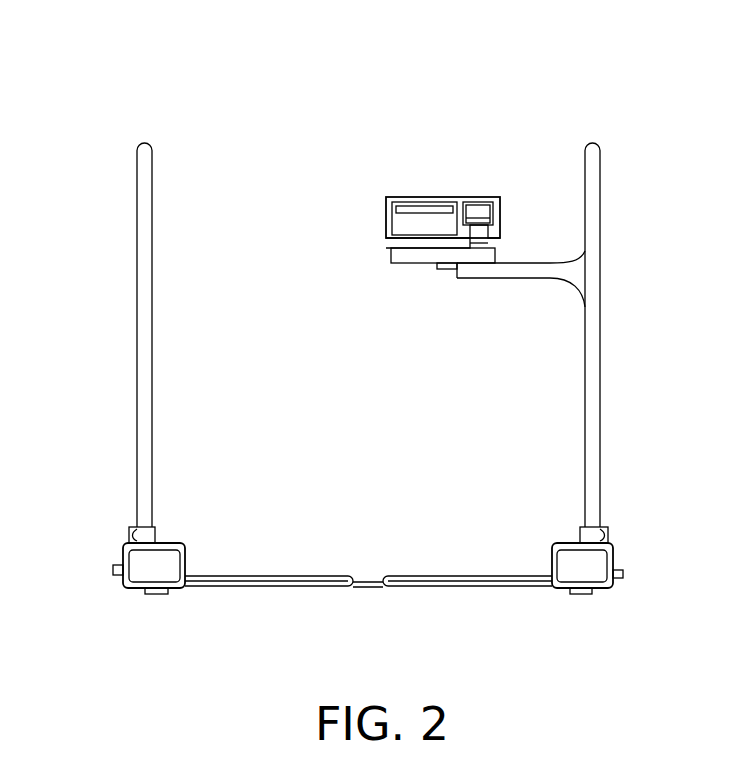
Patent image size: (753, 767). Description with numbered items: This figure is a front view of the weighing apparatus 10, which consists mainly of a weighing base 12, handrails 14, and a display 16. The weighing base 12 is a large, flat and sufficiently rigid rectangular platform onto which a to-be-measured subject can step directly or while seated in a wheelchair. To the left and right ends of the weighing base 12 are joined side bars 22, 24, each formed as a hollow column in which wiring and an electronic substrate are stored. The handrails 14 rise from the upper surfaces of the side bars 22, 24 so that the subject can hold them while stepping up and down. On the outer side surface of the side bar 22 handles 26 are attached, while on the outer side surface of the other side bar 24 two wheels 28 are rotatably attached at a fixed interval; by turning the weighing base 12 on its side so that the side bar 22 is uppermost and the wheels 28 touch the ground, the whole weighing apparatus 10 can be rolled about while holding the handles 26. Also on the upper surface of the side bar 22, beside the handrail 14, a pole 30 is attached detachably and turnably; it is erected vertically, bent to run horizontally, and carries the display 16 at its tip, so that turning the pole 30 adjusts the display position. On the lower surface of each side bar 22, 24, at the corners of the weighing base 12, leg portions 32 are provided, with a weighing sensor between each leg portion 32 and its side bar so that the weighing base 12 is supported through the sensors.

The weighing apparatus 10 is at (261, 127).
The weighing base 12 is at (375, 588).
The handrails 14 is at (137, 262).
The display 16 is at (412, 197).
The side bar 22 is at (597, 565).
The side bar 24 is at (127, 548).
The handles 26 is at (623, 575).
The wheels 28 is at (112, 572).
The pole 30 is at (540, 265).
The leg portions 32 is at (160, 595).